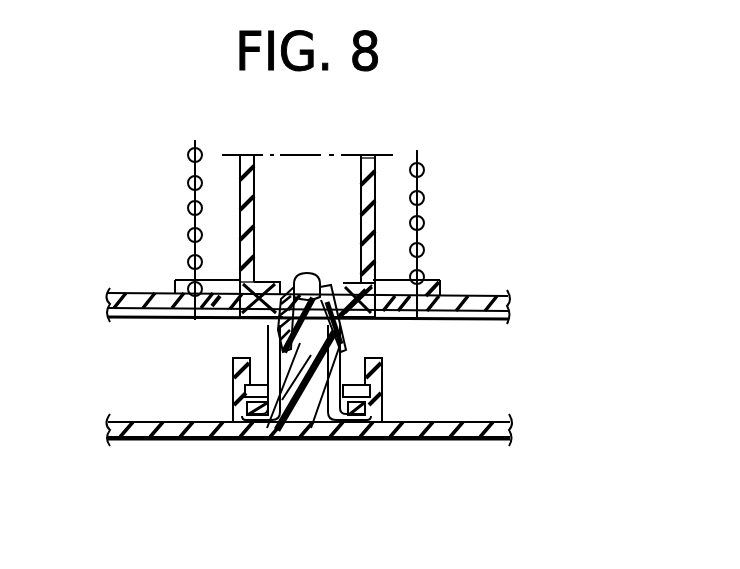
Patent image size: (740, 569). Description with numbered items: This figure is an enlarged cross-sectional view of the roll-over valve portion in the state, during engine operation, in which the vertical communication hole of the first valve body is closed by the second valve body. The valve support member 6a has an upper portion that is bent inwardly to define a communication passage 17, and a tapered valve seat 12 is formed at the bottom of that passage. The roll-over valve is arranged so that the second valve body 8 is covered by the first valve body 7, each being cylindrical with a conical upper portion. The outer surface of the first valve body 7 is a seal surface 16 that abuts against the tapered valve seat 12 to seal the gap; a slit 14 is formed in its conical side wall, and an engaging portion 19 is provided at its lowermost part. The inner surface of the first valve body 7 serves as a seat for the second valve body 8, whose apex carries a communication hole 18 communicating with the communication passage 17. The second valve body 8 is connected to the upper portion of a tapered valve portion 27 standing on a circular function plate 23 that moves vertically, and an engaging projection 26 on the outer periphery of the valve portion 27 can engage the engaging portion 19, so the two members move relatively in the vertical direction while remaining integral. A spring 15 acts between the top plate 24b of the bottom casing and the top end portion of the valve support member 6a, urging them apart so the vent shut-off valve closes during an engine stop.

The valve support member 6a is at (369, 157).
The first valve body 7 is at (332, 284).
The second valve body 8 is at (308, 430).
The valve seat 12 is at (247, 278).
The slit 14 is at (279, 355).
The spring 15 is at (424, 170).
The seal surface 16 is at (300, 322).
The communication passage 17 is at (322, 194).
The communication hole 18 is at (312, 271).
The engaging portion 19 is at (244, 403).
The circular function plate 23 is at (458, 432).
The top plate 24b is at (477, 295).
The engaging projection 26 is at (383, 384).
The valve portion 27 is at (343, 331).